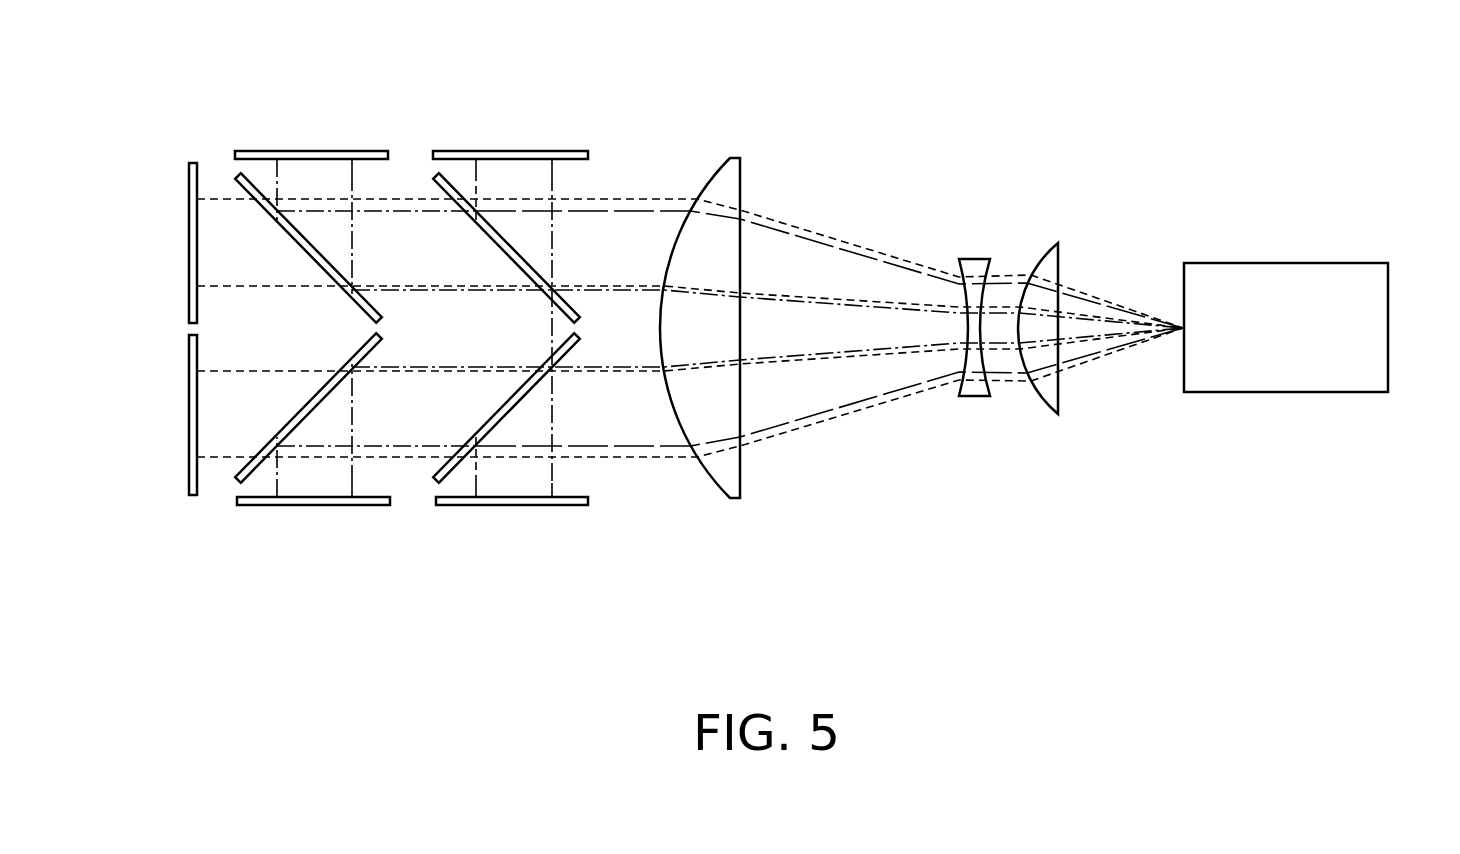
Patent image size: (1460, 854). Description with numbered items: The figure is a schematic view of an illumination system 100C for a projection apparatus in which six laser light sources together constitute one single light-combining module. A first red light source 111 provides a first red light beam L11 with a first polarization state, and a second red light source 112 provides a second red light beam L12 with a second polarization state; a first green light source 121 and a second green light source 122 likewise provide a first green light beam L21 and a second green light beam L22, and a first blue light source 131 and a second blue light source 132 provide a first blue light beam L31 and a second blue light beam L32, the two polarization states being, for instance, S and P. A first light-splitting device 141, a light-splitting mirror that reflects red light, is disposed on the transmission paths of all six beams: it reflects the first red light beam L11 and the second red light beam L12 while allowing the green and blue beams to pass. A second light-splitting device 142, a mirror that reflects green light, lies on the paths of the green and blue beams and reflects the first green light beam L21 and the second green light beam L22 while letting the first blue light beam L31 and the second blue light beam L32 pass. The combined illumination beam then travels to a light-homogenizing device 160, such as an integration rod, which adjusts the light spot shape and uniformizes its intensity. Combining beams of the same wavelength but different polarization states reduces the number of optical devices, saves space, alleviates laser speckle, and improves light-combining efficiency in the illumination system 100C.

The illumination system 100C is at (1438, 647).
The first red light source 111 is at (513, 505).
The second red light source 112 is at (513, 152).
The first green light source 121 is at (313, 505).
The second green light source 122 is at (313, 152).
The first blue light source 131 is at (189, 408).
The second blue light source 132 is at (189, 235).
The first light-splitting device 141 is at (436, 175).
The second light-splitting device 142 is at (237, 175).
The light-homogenizing device 160 is at (1263, 275).
The first red light beam L11 is at (552, 481).
The second red light beam L12 is at (552, 173).
The first green light beam L21 is at (352, 482).
The second green light beam L22 is at (352, 174).
The first blue light beam L31 is at (222, 458).
The second blue light beam L32 is at (222, 198).